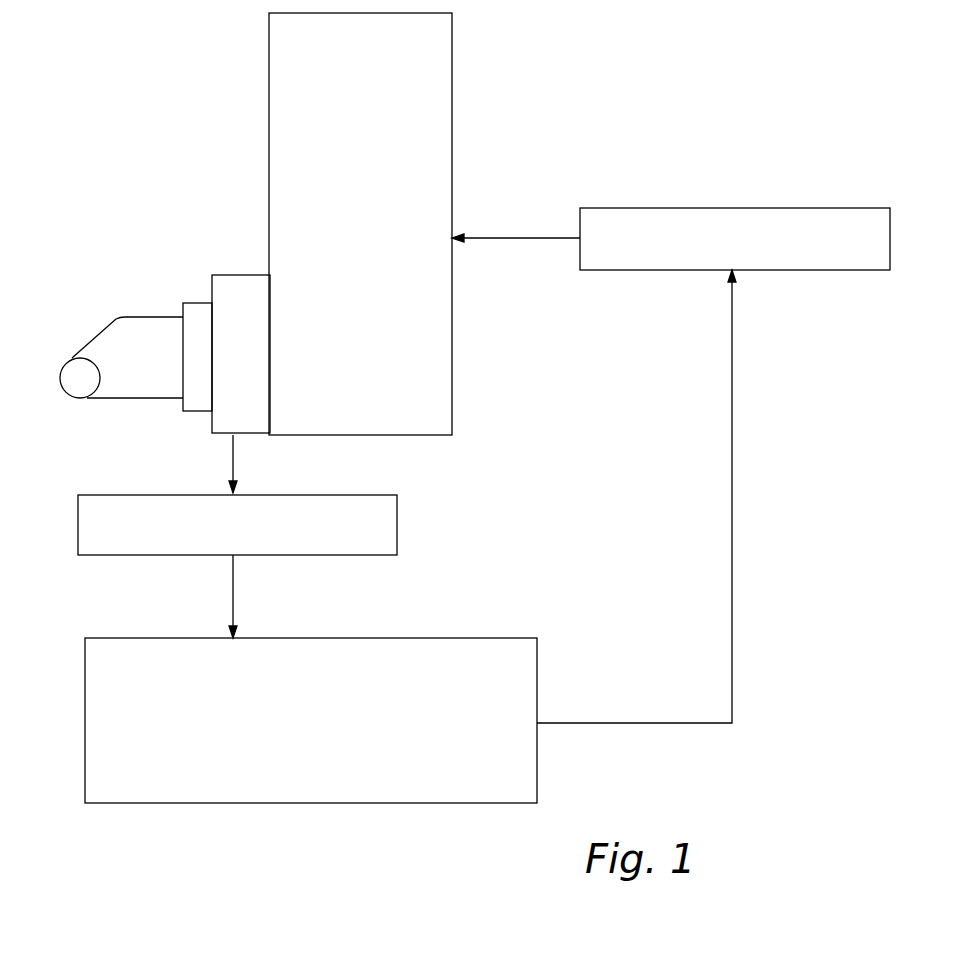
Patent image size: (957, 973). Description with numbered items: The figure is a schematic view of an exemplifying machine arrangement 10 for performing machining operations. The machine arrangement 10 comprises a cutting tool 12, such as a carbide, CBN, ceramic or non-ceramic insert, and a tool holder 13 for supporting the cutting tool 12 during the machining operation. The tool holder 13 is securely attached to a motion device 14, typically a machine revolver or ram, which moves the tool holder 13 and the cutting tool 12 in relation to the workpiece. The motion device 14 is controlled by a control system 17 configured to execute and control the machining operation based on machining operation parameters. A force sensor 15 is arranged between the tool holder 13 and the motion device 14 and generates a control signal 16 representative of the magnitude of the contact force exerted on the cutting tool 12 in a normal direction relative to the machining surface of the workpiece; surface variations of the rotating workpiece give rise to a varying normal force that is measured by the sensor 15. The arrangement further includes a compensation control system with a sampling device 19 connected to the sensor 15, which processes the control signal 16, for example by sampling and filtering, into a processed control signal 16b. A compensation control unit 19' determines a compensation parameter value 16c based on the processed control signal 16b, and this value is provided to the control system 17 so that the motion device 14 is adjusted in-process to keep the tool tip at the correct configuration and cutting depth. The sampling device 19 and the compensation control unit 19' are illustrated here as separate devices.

The machine arrangement 10 is at (107, 166).
The cutting tool 12 is at (77, 383).
The tool holder 13 is at (117, 345).
The motion device 14 is at (437, 322).
The sensor 15 is at (222, 273).
The control signal 16 is at (237, 453).
The processed control signal 16b is at (235, 587).
The compensation parameter value 16c is at (640, 720).
The control system 17 is at (677, 232).
The sampling device 19 is at (275, 525).
The compensation control unit 19' is at (321, 680).